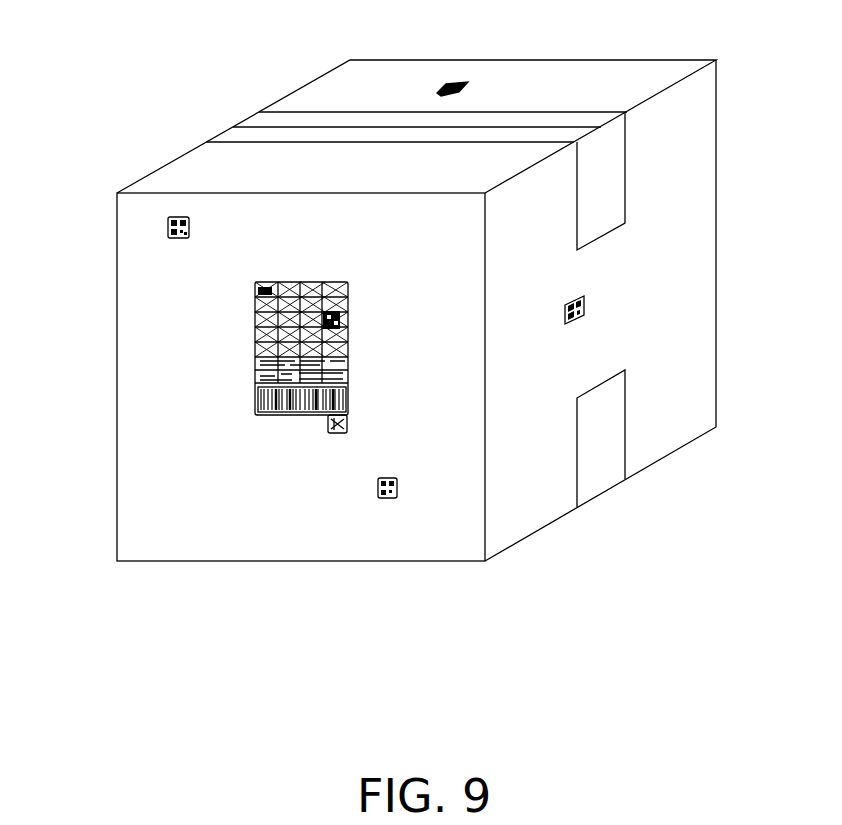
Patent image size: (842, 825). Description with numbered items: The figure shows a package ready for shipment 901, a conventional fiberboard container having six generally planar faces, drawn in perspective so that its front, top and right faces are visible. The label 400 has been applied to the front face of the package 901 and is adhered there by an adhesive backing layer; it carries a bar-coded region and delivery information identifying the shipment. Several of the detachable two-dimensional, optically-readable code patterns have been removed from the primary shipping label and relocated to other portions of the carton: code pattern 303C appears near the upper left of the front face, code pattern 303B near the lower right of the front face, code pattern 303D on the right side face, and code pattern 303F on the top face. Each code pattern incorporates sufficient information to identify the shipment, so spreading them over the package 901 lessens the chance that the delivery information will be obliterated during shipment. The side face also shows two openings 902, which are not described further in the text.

The package ready for shipment 901 is at (327, 98).
The windows/openings in box side 902 is at (603, 415).
The label 400 is at (243, 334).
The two-dimensional, optically-readable code pattern 303B is at (385, 510).
The two-dimensional, optically-readable code pattern 303C is at (160, 219).
The two-dimensional, optically-readable code pattern 303D is at (555, 350).
The two-dimensional, optically-readable code pattern 303F is at (460, 80).